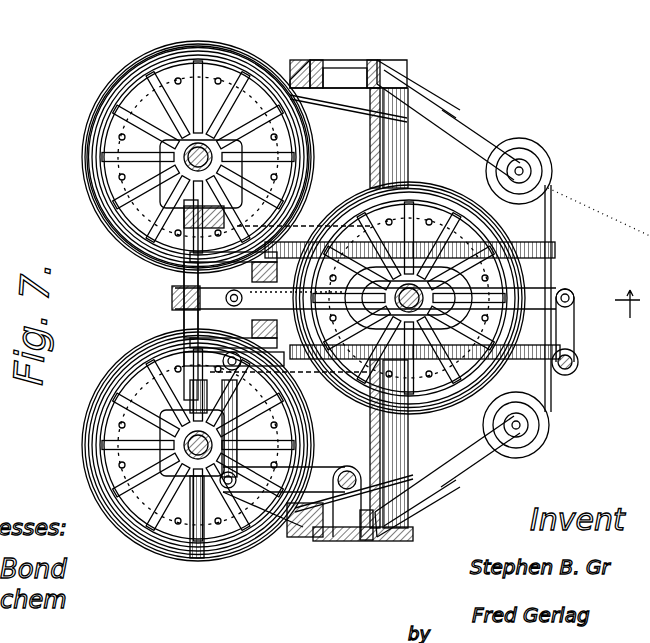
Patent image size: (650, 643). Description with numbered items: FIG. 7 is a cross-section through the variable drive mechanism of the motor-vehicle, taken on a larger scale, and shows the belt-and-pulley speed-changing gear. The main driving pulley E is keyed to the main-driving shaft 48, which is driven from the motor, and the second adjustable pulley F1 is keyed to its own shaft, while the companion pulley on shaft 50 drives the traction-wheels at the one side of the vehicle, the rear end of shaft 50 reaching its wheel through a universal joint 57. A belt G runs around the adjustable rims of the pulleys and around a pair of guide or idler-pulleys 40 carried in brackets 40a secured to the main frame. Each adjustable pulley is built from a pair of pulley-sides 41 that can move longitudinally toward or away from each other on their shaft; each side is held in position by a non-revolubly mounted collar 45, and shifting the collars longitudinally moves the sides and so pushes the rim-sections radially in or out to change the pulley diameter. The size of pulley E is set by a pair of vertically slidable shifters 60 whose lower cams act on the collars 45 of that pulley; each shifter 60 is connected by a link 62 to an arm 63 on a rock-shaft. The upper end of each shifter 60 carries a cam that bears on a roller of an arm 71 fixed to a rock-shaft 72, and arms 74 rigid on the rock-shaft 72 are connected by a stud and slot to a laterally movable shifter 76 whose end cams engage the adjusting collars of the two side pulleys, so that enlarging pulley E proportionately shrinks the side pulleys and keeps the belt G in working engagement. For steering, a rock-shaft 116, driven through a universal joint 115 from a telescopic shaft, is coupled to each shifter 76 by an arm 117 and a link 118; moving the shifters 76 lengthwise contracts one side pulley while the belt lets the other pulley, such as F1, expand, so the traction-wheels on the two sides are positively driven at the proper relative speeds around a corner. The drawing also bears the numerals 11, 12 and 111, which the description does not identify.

The pulley-side 41 is at (84, 162).
The adjustable pulley F1 is at (90, 104).
The shaft 50 is at (165, 108).
The collar 45 is at (188, 135).
The hub housing / axle stem 12 is at (196, 560).
The universal joint 115 is at (182, 470).
The shifter 60 is at (322, 232).
The main driving pulley E is at (520, 266).
The arm 71 is at (178, 288).
The frame post 11 is at (128, 302).
The arm 74 is at (185, 300).
The shifter 76 is at (140, 214).
The rock-shaft 72 is at (280, 318).
The belt G is at (345, 60).
The main-driving shaft 48 is at (372, 200).
The bracket 40a is at (510, 158).
The idler-pulley 40 is at (548, 158).
The arm 63 is at (578, 328).
The link 62 is at (586, 278).
The universal joint 57 is at (347, 537).
The rock-shaft 116 is at (362, 538).
The arm 117 is at (290, 537).
The link 118 is at (255, 405).
The frame post 111 is at (337, 400).